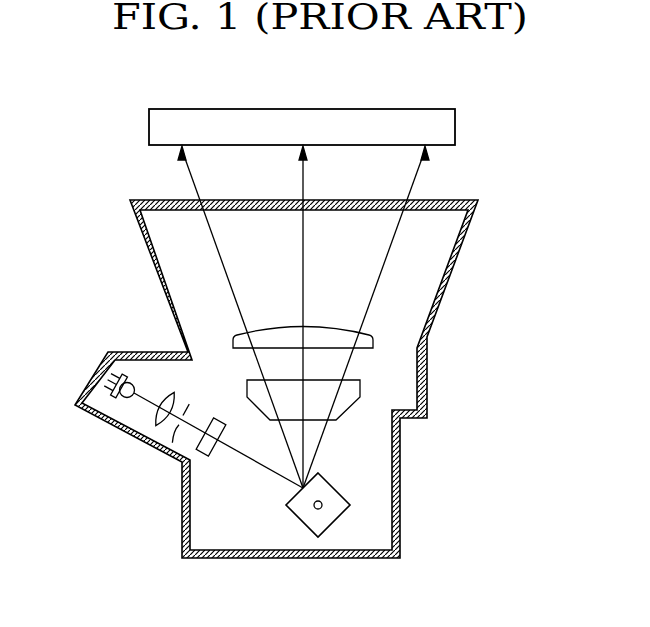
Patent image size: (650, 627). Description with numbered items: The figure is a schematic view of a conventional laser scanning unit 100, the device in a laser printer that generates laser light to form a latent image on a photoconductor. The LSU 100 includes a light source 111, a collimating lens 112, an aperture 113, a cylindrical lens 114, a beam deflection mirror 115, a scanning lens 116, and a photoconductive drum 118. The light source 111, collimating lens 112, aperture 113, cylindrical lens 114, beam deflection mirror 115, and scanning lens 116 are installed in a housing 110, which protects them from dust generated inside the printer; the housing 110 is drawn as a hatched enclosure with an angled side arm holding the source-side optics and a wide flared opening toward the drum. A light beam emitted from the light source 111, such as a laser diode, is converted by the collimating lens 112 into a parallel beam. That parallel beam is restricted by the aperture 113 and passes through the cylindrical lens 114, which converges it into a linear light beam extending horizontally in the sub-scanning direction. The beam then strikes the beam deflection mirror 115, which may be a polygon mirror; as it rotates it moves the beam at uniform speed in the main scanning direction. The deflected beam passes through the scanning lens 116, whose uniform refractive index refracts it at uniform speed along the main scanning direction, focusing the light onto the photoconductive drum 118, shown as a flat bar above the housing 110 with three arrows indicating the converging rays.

The laser scanning unit 100 is at (294, 598).
The housing 110 is at (400, 542).
The light source 111 is at (99, 418).
The collimating lens 112 is at (150, 430).
The aperture 113 is at (170, 446).
The cylindrical lens 114 is at (206, 452).
The beam deflection mirror 115 is at (336, 490).
The scanning lens 116 is at (360, 388).
The photoconductive drum 118 is at (456, 127).